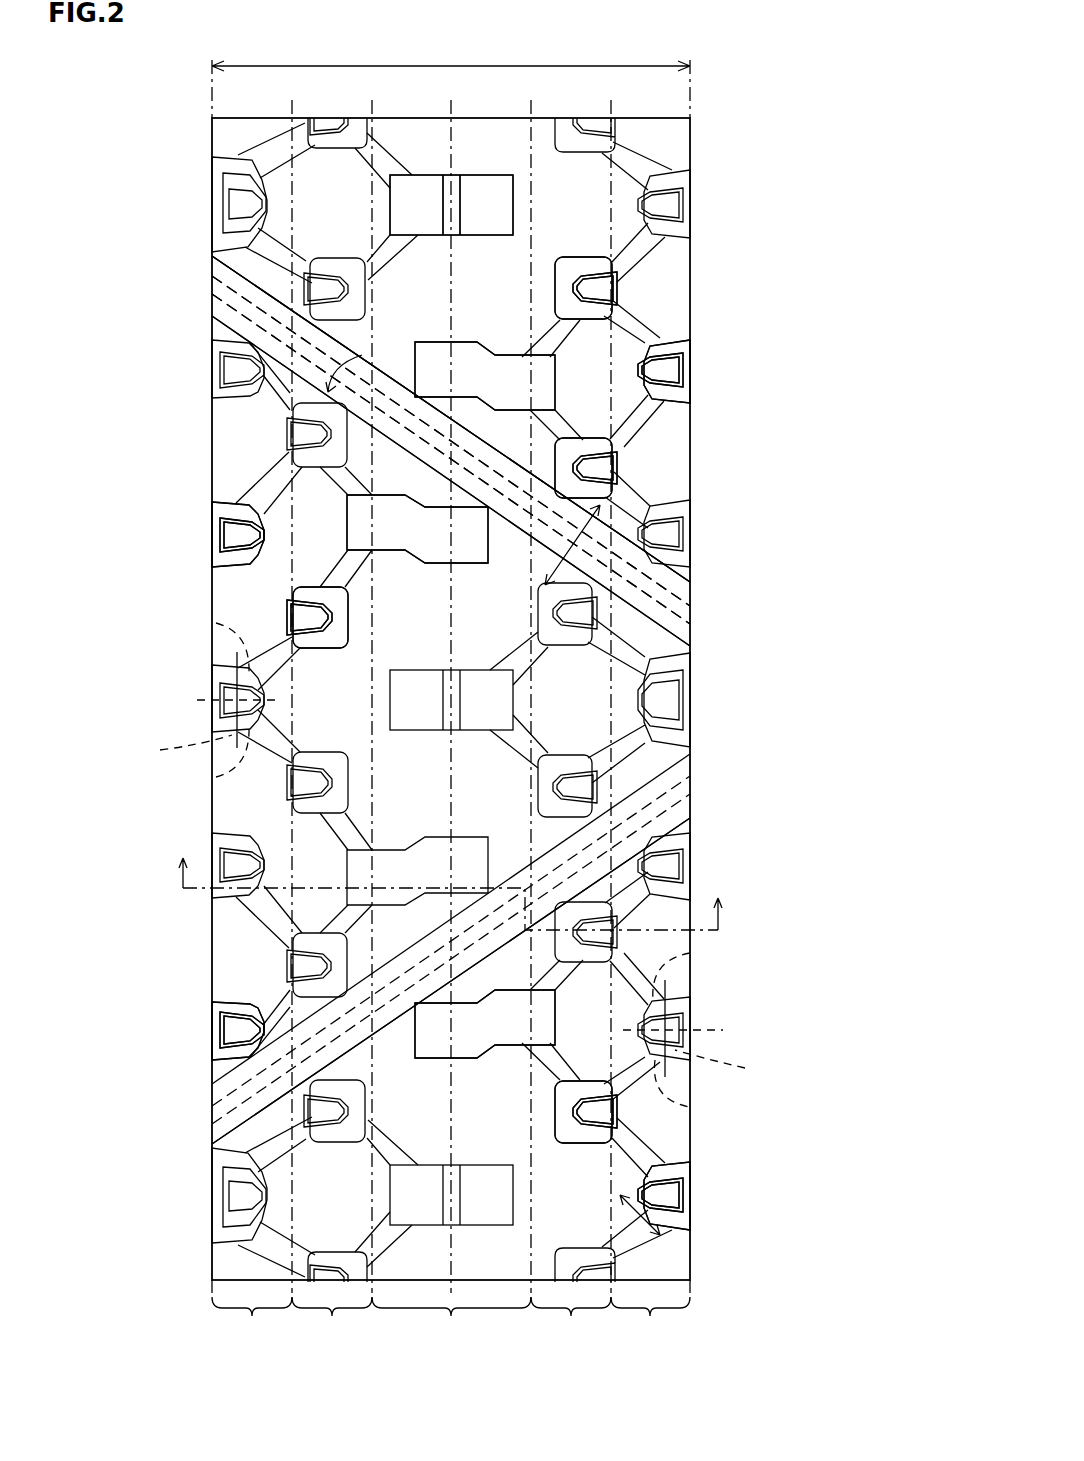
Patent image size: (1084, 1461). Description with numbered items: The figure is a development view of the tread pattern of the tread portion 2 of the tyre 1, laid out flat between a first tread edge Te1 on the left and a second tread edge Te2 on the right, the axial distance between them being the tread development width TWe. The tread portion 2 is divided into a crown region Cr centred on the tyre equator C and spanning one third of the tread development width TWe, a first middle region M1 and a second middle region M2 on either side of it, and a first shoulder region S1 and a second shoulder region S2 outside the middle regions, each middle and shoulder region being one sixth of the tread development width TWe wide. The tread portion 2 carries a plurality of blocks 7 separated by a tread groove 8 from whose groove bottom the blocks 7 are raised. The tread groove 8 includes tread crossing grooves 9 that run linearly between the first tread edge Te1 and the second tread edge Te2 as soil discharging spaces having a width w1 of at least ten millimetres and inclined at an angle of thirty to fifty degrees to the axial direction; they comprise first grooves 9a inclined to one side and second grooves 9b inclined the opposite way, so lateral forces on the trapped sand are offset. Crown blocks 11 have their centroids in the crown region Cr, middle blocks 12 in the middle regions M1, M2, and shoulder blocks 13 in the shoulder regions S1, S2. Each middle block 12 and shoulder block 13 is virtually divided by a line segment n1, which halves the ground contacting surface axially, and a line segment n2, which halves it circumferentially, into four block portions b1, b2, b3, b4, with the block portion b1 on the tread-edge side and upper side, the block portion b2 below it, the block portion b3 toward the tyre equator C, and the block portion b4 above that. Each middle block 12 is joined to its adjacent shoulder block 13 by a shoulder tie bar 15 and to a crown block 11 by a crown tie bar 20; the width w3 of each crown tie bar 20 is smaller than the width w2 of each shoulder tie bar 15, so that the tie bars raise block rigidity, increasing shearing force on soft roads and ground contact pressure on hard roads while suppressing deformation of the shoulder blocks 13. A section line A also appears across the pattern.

The tyre 1 is at (794, 107).
The tread portion 2 is at (724, 113).
The blocks 7 is at (245, 525).
The tread groove 8 is at (487, 145).
The tread crossing grooves 9 is at (385, 703).
The first grooves 9a is at (232, 318).
The second grooves 9b is at (232, 1125).
The crown blocks 11 is at (358, 515).
The middle blocks 12 is at (303, 612).
The shoulder blocks 13 is at (240, 686).
The shoulder tie bar 15 is at (665, 1262).
The crown tie bar 20 is at (555, 1078).
The block portion b1 is at (218, 690).
The block portion b2 is at (452, 909).
The block portion b3 is at (238, 760).
The block portion b4 is at (236, 655).
The line segment n1 is at (670, 975).
The line segment n2 is at (700, 1030).
The width w1 is at (600, 560).
The width w2 is at (645, 1218).
The width w3 is at (610, 1105).
The section line A is at (450, 879).
The tyre equator C is at (449, 688).
The crown region Cr is at (451, 1323).
The first middle region M1 is at (333, 724).
The second middle region M2 is at (570, 724).
The first shoulder region S1 is at (247, 1323).
The second shoulder region S2 is at (655, 1323).
The first tread edge Te1 is at (213, 185).
The second tread edge Te2 is at (692, 205).
The tread development width TWe is at (451, 52).